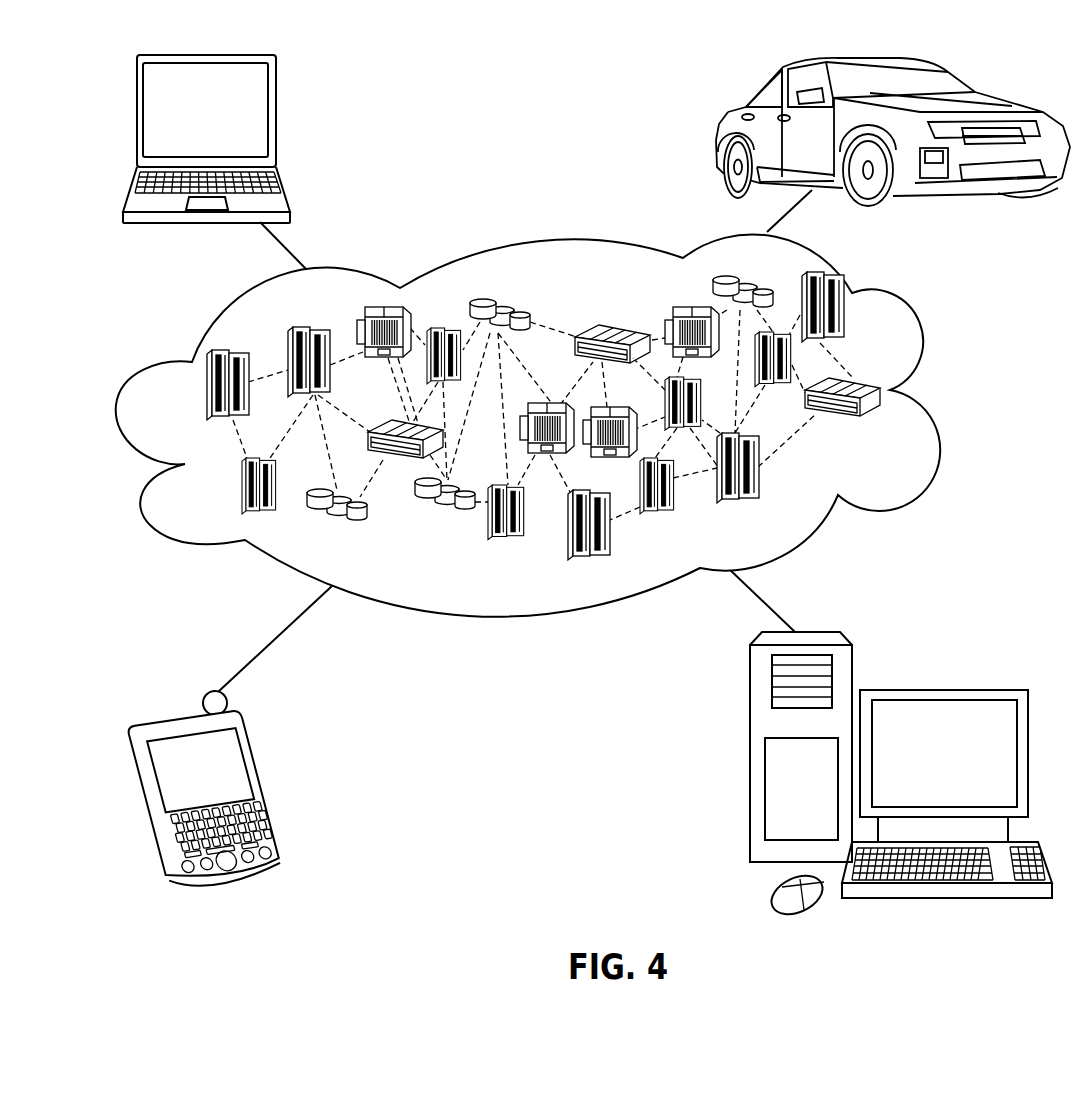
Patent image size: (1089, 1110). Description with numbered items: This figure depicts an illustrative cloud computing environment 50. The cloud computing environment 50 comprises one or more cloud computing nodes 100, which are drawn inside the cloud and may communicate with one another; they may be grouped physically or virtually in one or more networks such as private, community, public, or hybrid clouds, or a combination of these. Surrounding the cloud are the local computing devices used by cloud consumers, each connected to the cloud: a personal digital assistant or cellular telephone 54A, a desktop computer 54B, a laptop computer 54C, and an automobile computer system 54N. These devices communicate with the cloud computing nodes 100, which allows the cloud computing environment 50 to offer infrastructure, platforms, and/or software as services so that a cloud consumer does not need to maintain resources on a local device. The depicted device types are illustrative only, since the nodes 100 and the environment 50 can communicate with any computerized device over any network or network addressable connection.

The cloud computing environment 50 is at (942, 395).
The cloud computing nodes 100 is at (883, 426).
The personal digital assistant (PDA) or cellular telephone 54A is at (267, 780).
The desktop computer 54B is at (942, 688).
The laptop computer 54C is at (275, 118).
The automobile computer system 54N is at (722, 132).